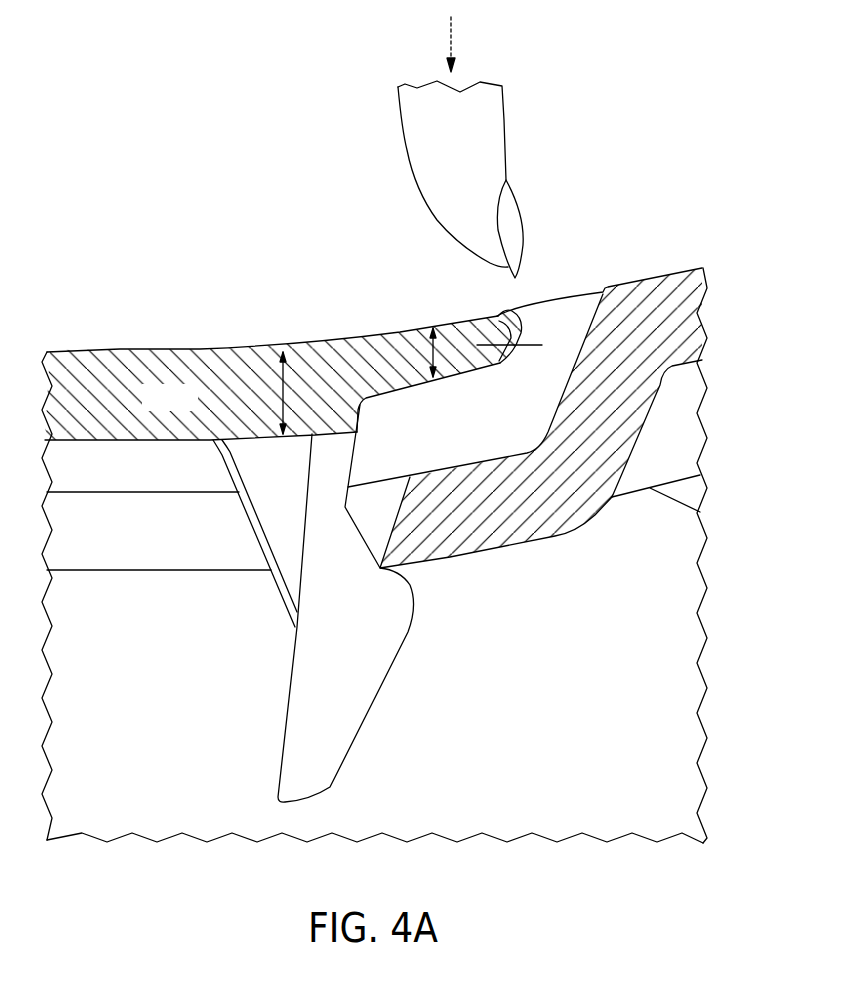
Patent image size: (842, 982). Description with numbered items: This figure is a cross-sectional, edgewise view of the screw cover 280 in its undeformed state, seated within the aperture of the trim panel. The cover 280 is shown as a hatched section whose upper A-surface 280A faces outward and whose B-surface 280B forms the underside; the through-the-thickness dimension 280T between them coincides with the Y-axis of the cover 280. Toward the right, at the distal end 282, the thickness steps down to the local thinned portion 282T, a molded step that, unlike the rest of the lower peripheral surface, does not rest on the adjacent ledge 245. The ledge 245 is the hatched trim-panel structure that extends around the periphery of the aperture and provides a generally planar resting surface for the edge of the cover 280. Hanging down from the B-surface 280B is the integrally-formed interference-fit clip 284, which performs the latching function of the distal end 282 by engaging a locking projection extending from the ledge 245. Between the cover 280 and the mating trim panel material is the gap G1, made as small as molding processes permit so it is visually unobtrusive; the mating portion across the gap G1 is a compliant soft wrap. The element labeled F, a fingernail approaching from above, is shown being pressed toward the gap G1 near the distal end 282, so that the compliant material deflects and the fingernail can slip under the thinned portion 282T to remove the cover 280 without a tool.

The screw cover 280 is at (194, 409).
The A-surface 280A is at (100, 350).
The B-surface 280B is at (132, 446).
The through-the-thickness dimension 280T is at (281, 370).
The distal end 282 is at (480, 282).
The thinned portion 282T is at (497, 312).
The clip 284 is at (366, 646).
The ledge 245 is at (463, 460).
The finger / force F is at (504, 137).
The gap G1 is at (542, 345).